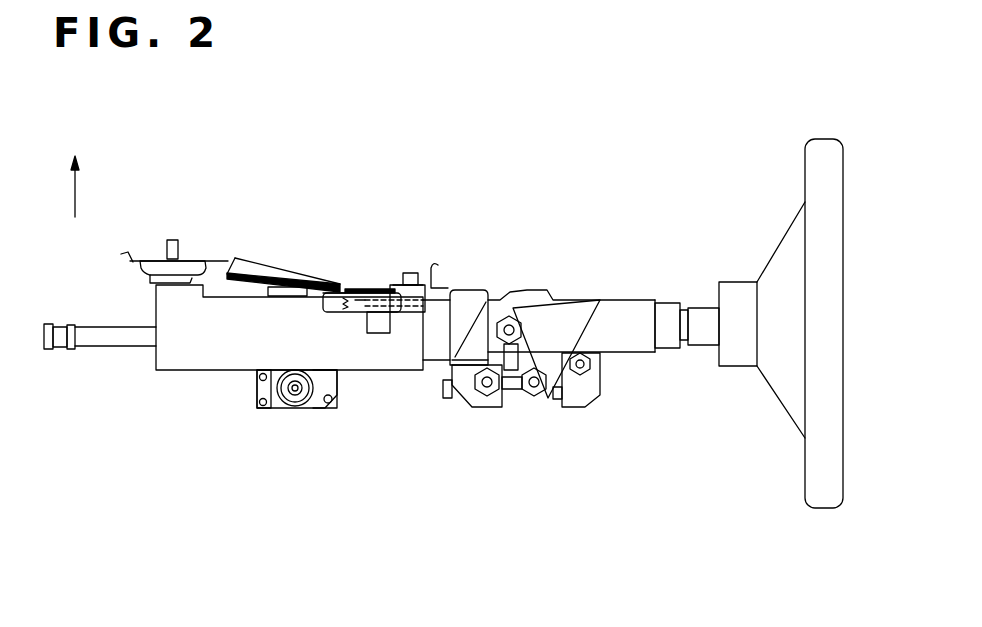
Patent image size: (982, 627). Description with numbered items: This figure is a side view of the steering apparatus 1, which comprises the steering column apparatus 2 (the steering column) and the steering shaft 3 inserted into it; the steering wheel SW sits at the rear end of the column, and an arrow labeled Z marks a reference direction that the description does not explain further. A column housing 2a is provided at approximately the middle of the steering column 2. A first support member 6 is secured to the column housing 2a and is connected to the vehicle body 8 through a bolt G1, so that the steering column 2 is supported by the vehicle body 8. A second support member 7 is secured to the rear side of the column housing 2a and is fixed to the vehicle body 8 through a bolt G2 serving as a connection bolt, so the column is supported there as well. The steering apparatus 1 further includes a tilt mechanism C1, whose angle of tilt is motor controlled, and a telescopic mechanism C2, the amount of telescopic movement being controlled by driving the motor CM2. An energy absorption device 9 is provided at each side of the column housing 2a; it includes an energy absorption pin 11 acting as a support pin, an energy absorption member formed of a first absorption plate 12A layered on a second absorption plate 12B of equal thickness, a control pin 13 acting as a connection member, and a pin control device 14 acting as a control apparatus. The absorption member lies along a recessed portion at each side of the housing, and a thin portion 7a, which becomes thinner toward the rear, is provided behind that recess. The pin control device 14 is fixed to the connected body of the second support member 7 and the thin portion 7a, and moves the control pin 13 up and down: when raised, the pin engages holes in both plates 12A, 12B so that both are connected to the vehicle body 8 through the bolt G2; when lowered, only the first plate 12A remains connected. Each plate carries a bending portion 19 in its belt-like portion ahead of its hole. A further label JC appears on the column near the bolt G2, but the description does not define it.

The steering apparatus 1 is at (574, 194).
The steering column apparatus 2 is at (600, 300).
The column housing 2a is at (196, 371).
The steering shaft 3 is at (95, 350).
The first support member 6 is at (135, 262).
The second support member 7 is at (324, 312).
The thin portion 7a is at (404, 313).
The vehicle body 8 is at (300, 265).
The energy absorption device 9 is at (362, 326).
The energy absorption pin 11 is at (342, 311).
The first absorption plate 12A is at (244, 272).
The second absorption plate 12B is at (245, 296).
The control pin 13 is at (370, 288).
The pin control device 14 is at (380, 334).
The bending portion 19 is at (340, 290).
The bolt G1 is at (173, 240).
The connection bolt G2 is at (410, 272).
The joint connector JC is at (443, 276).
The tilt mechanism C1 is at (531, 396).
The telescopic mechanism C2 is at (322, 410).
The motor CM2 is at (290, 410).
The steering wheel SW is at (823, 138).
The Z axis direction Z is at (74, 176).